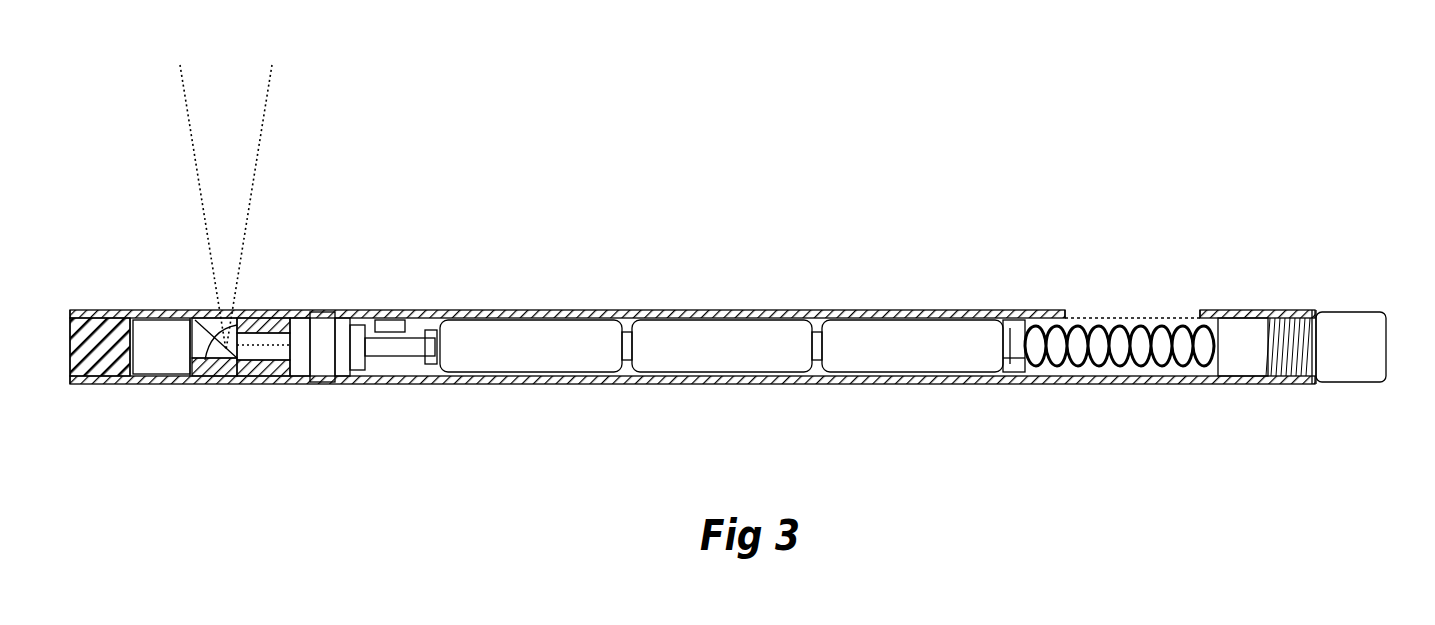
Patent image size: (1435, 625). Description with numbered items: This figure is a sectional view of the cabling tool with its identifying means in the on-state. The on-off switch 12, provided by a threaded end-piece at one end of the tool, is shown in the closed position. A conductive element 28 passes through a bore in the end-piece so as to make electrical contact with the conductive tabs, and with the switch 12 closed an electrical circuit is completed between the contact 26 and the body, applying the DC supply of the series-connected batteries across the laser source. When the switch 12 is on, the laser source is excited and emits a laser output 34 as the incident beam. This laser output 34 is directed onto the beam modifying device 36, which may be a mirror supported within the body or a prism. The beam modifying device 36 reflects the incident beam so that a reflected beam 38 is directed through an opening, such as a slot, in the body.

The on-off switch 12 is at (1338, 272).
The contact 26 is at (1013, 340).
The conductive element 28 is at (1145, 360).
The laser output 34 is at (266, 345).
The beam modifying device 36 is at (206, 358).
The reflected beam 38 is at (258, 140).